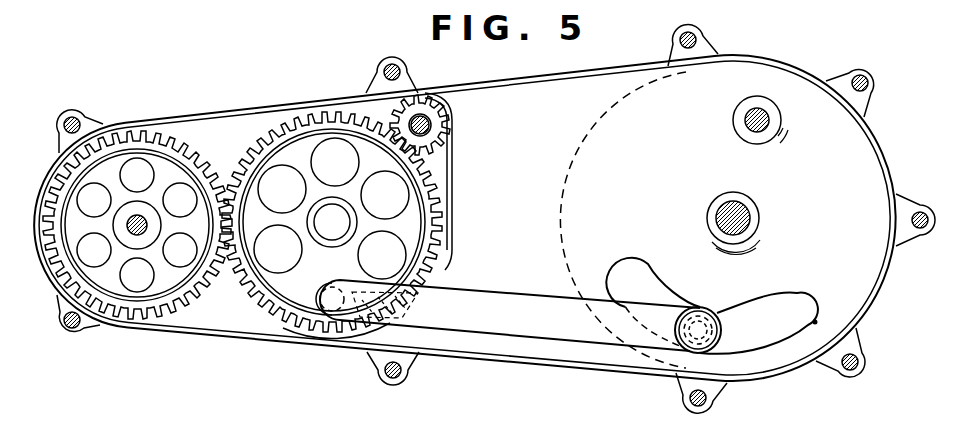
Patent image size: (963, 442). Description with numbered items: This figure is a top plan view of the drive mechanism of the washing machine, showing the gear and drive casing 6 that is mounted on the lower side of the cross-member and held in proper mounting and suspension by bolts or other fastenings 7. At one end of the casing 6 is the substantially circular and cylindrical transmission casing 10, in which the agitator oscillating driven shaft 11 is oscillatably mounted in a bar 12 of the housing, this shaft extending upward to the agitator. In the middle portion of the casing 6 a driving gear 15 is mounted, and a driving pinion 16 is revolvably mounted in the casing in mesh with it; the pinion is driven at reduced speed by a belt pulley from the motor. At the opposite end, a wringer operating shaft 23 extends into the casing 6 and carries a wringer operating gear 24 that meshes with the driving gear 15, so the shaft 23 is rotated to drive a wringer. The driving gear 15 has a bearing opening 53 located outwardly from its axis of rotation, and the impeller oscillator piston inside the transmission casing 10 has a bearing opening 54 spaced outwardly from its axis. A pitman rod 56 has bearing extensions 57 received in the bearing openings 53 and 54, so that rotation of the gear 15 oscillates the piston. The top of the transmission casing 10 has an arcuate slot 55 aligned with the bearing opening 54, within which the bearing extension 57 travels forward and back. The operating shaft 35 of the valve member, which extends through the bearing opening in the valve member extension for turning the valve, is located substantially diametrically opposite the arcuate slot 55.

The gear and drive casing 6 is at (546, 88).
The bolts or other fastenings 7 is at (401, 75).
The transmission casing 10 is at (896, 176).
The agitator oscillating driven shaft 11 is at (744, 212).
The bar 12 is at (716, 218).
The driving gear 15 is at (462, 198).
The driving pinion 16 is at (450, 124).
The wringer operating shaft 23 is at (142, 234).
The wringer operating gear 24 is at (170, 150).
The operating shaft 35 is at (745, 118).
The bearing opening 53 is at (320, 333).
The bearing opening 54 is at (714, 306).
The arcuate slot 55 is at (817, 321).
The pitman rod 56 is at (565, 327).
The bearing extension 57 is at (722, 333).